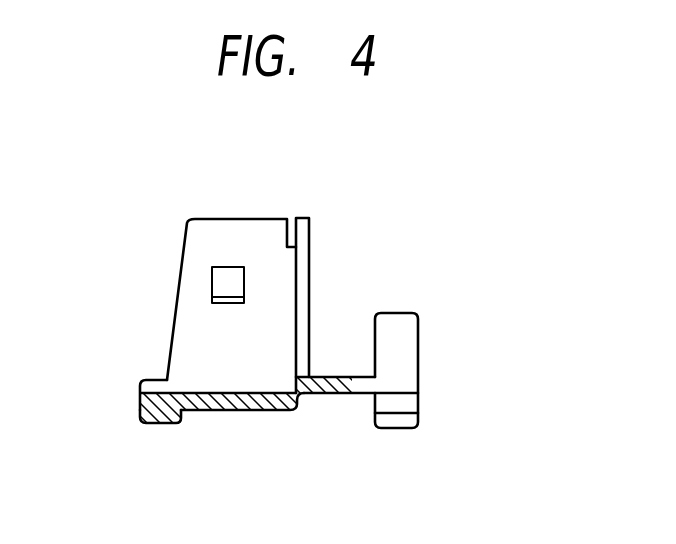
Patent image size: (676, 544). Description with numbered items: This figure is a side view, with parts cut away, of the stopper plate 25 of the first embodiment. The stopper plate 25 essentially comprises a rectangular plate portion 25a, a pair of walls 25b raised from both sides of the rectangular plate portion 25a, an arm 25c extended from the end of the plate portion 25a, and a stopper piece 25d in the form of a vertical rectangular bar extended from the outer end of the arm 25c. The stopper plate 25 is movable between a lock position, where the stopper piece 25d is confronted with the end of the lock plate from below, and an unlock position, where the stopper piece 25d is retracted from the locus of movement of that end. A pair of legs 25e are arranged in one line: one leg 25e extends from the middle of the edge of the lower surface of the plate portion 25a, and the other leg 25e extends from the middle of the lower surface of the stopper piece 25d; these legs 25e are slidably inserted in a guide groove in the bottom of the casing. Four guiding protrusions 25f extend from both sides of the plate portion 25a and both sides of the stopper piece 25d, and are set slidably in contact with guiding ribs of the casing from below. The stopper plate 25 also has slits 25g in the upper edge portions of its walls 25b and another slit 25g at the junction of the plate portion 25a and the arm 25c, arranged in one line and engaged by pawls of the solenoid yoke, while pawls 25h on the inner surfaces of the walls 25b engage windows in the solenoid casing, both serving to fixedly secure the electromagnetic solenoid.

The stopper plate 25 is at (374, 221).
The rectangular plate portion 25a is at (227, 411).
The wall 25b is at (195, 218).
The arm 25c is at (323, 377).
The stopper piece 25d is at (420, 343).
The leg 25e is at (158, 425).
The guiding protrusion 25f is at (400, 398).
The slit 25g is at (292, 237).
The pawl 25h is at (217, 285).